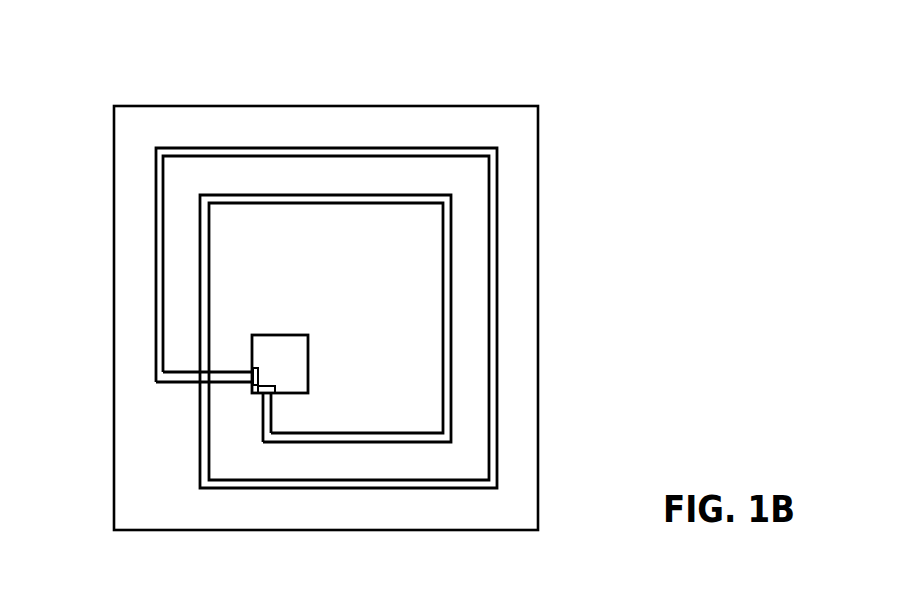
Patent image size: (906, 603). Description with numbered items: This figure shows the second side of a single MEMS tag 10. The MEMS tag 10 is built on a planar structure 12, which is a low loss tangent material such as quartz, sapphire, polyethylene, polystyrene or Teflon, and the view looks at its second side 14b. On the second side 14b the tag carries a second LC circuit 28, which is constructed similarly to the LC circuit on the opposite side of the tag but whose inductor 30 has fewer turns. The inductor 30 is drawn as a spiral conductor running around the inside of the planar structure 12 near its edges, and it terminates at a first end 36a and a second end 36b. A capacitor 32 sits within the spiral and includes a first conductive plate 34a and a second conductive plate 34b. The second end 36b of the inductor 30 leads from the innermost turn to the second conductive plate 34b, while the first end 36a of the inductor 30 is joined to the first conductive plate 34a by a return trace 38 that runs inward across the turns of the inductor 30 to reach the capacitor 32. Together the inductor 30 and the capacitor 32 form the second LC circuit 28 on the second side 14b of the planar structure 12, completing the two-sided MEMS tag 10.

The MEMS tag 10 is at (371, 83).
The planar structure 12 is at (199, 105).
The second side 14b is at (448, 118).
The second LC circuit 28 is at (500, 255).
The inductor 30 is at (498, 213).
The capacitor 32 is at (300, 356).
The first conductive plate 34a is at (258, 374).
The second conductive plate 34b is at (270, 385).
The first end of inductor 36a is at (153, 377).
The second end of inductor 36b is at (260, 412).
The return trace 38 is at (178, 361).